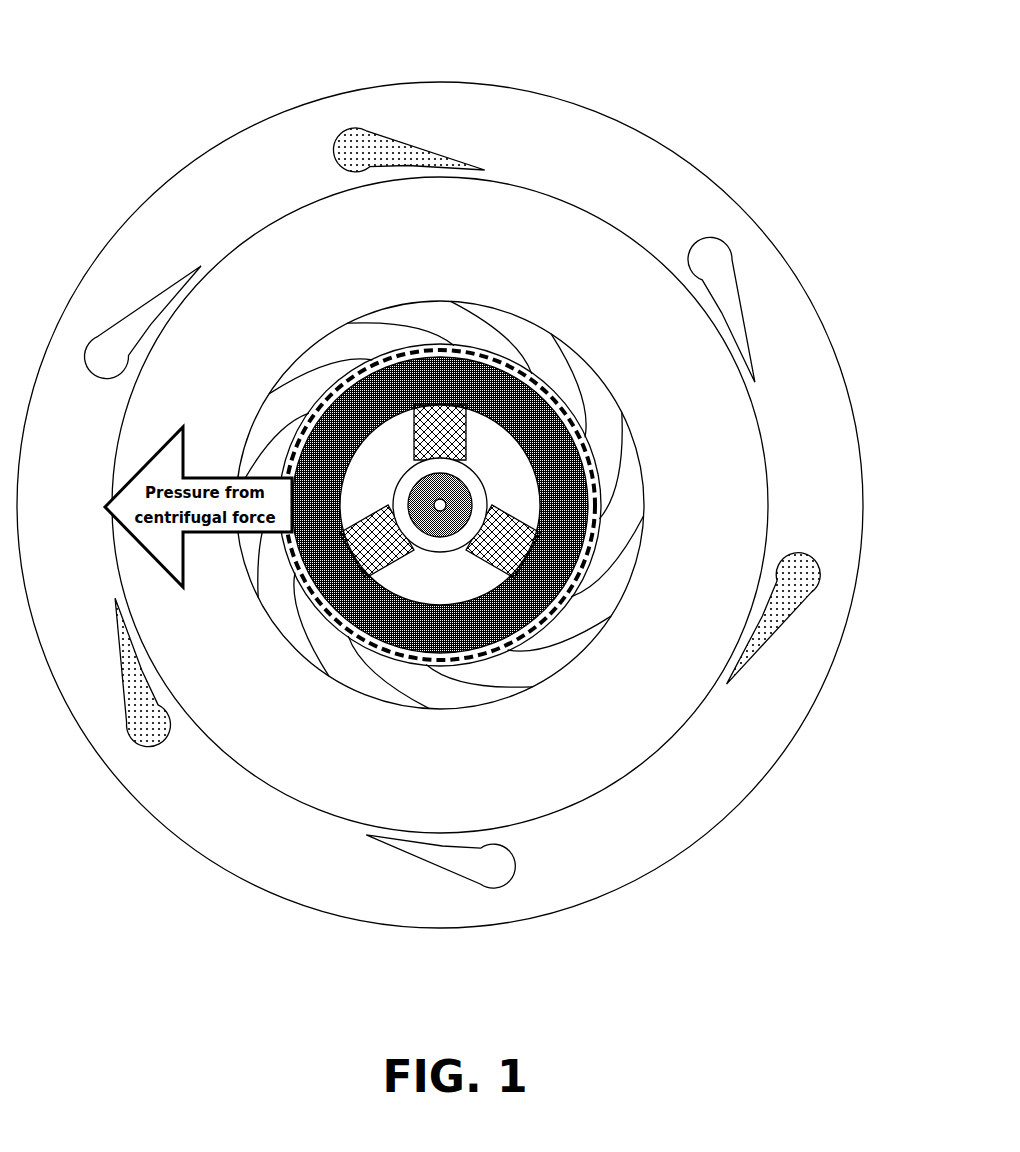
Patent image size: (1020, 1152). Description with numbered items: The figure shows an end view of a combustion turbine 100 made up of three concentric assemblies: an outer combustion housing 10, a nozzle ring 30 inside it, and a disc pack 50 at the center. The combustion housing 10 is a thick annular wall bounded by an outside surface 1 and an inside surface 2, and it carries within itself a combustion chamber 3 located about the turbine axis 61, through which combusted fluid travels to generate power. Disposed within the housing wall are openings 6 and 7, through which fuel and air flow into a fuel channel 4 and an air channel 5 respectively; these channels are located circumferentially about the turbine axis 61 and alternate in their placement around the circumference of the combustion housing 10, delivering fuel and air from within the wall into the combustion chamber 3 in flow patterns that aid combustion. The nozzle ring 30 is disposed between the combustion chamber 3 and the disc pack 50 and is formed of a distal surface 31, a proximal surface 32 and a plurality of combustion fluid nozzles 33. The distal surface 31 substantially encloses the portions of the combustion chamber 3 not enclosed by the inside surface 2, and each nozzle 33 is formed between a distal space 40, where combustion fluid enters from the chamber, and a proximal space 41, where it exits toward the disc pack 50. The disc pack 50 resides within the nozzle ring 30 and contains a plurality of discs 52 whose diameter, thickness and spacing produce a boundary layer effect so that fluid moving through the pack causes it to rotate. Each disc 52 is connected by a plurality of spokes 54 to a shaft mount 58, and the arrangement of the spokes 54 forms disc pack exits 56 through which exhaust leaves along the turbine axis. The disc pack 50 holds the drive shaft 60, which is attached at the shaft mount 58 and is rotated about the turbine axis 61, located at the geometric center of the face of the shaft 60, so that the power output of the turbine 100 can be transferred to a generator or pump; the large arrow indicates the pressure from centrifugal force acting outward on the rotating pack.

The turbine 100 is at (165, 62).
The outside surface 1 is at (649, 133).
The inside surface 2 is at (572, 197).
The combustion chamber 3 is at (544, 197).
The fuel channel 4 is at (408, 105).
The air channel 5 is at (127, 293).
The opening 6 is at (354, 146).
The opening 7 is at (102, 352).
The combustion housing 10 is at (224, 193).
The nozzle ring 30 is at (461, 474).
The distal surface 31 is at (408, 302).
The proximal surface 32 is at (310, 392).
The combustion fluid nozzle 33 is at (625, 493).
The distal space 40 is at (396, 712).
The proximal space 41 is at (284, 589).
The disc pack 50 is at (453, 550).
The disc 52 is at (377, 626).
The spoke 54 is at (510, 553).
The disc pack exit 56 is at (439, 528).
The shaft mount 58 is at (487, 648).
The drive shaft 60 is at (462, 470).
The turbine axis 61 is at (447, 500).